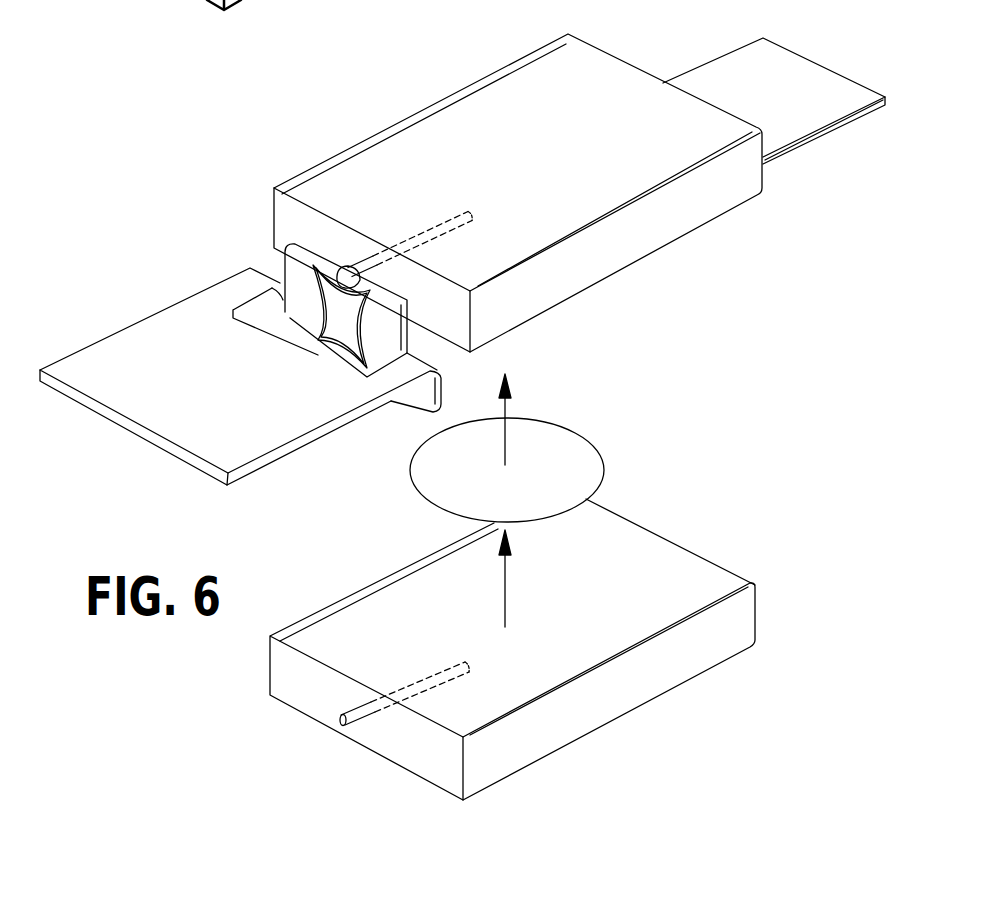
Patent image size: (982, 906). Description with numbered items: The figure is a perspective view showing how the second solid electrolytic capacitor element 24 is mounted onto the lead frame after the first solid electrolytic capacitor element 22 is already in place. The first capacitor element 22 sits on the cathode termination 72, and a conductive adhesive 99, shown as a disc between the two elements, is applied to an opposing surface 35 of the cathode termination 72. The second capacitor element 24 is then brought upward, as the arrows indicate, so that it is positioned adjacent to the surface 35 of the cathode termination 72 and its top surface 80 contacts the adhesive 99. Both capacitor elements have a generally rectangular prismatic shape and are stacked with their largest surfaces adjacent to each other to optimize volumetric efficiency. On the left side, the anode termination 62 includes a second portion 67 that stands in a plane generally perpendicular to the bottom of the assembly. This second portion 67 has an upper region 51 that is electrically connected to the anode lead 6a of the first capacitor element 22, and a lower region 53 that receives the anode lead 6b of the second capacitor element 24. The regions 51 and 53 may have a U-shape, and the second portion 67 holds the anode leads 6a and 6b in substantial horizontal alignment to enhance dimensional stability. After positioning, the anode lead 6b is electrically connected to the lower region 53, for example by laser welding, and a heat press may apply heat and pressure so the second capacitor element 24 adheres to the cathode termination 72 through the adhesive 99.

The first solid electrolytic capacitor element 22 is at (583, 95).
The cathode termination 72 is at (793, 91).
The opposing surface 35 is at (808, 140).
The anode lead 6a is at (448, 219).
The upper region 51 is at (347, 270).
The second portion 67 is at (325, 292).
The anode termination 62 is at (147, 366).
The lower region 53 is at (334, 337).
The conductive adhesive 99 is at (560, 452).
The top surface 80 is at (640, 528).
The second solid electrolytic capacitor element 24 is at (525, 627).
The anode lead 6b is at (435, 680).